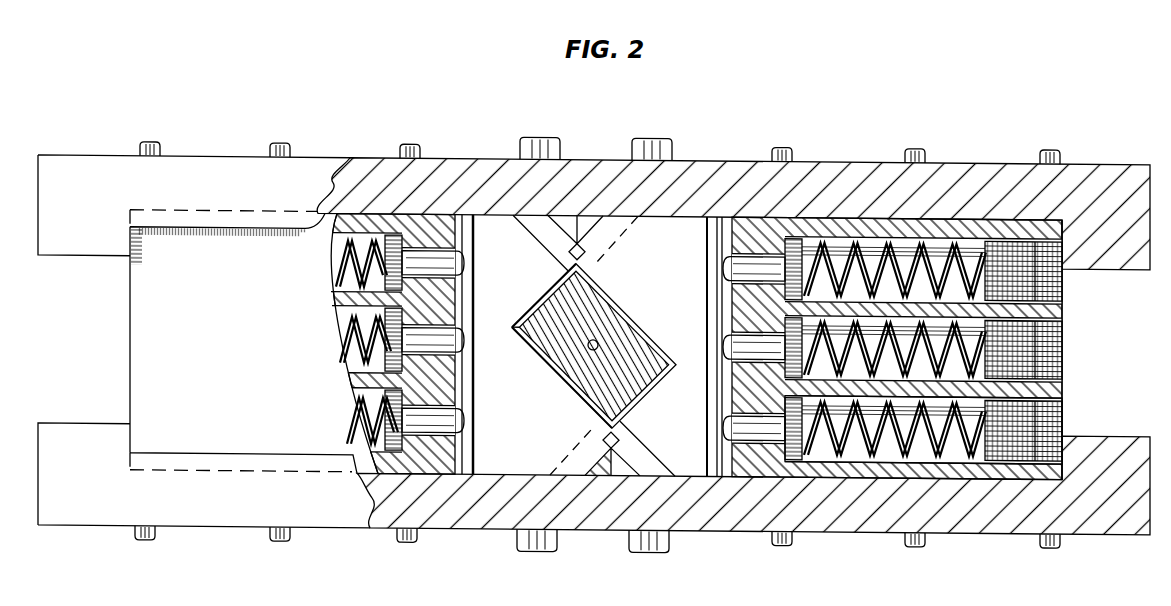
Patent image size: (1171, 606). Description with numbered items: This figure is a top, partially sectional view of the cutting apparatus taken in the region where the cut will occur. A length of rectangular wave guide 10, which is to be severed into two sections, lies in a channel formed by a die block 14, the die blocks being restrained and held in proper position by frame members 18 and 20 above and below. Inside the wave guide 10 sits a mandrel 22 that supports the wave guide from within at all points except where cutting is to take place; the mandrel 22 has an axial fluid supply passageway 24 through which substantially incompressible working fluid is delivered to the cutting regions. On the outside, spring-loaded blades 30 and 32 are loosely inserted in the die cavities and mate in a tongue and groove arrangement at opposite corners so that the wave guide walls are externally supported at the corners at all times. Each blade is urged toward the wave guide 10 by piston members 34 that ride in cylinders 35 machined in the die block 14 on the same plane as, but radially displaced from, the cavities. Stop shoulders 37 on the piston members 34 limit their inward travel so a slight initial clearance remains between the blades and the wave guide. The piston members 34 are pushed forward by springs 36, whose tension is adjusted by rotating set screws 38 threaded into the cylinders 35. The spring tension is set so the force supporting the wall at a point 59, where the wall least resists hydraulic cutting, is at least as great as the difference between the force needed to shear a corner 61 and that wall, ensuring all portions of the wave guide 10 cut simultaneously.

The rectangular wave guide 10 is at (541, 300).
The die block 14 is at (246, 385).
The frame member 18 is at (700, 160).
The frame member 20 is at (846, 532).
The mandrel 22 is at (620, 351).
The fluid supply passageway 24 is at (588, 347).
The blade 30 is at (530, 436).
The blade 32 is at (670, 284).
The piston member 34 is at (432, 253).
The cylinder 35 is at (944, 458).
The spring 36 is at (340, 283).
The stop shoulder 37 is at (772, 218).
The set screw 38 is at (1062, 382).
The point on wave guide wall 59 is at (560, 376).
The corner of wave guide 61 is at (512, 330).